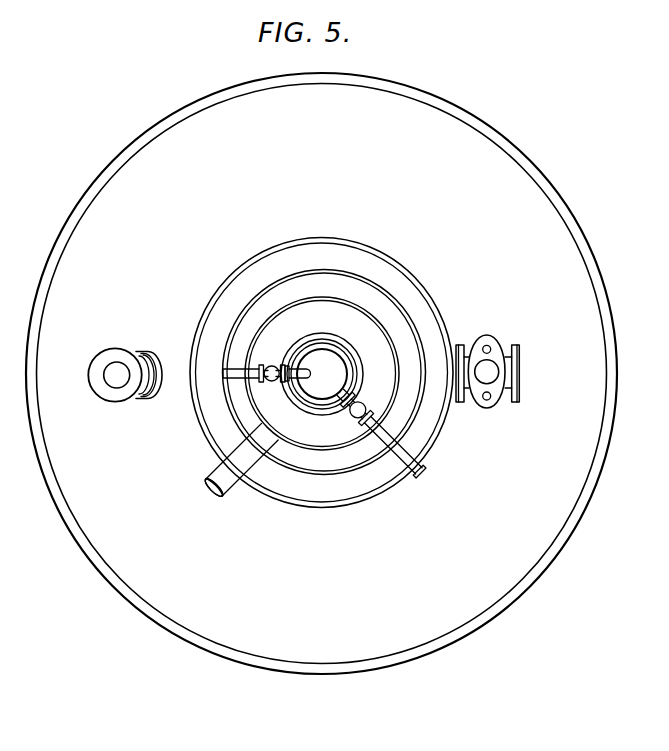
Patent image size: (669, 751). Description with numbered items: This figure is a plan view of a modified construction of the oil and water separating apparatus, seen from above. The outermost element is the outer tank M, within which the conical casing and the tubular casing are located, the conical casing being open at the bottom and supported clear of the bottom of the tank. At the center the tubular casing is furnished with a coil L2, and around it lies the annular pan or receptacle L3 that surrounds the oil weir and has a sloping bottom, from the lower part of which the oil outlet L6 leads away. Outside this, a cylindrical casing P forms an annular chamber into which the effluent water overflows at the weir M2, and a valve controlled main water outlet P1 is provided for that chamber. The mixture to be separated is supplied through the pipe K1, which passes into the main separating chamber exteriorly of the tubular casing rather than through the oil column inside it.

The outer tank M is at (480, 124).
The cylindrical casing P is at (406, 265).
The weir M2 is at (336, 475).
The annular pan or receptacle L3 is at (384, 326).
The coil L2 is at (332, 344).
The oil outlet L6 is at (222, 482).
The pipe K1 is at (134, 350).
The valve controlled main water outlet P1 is at (518, 364).